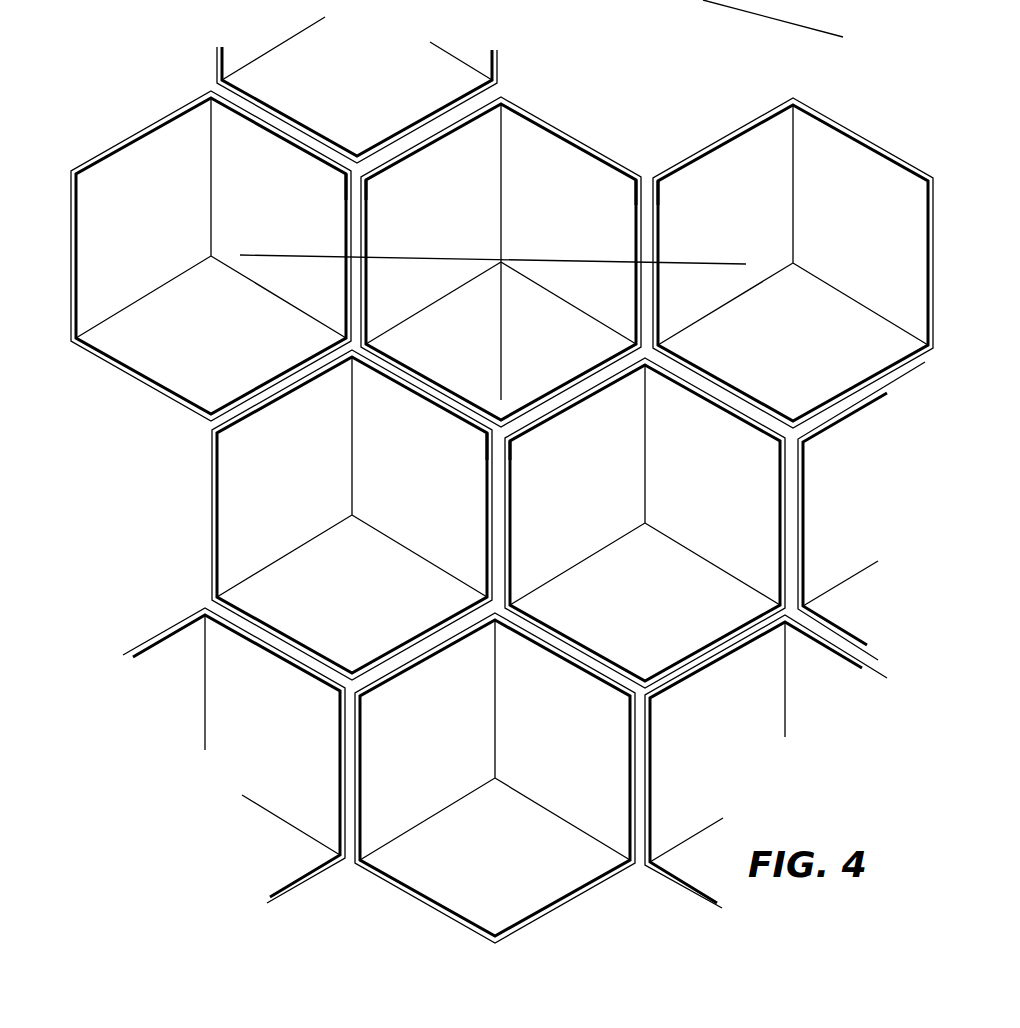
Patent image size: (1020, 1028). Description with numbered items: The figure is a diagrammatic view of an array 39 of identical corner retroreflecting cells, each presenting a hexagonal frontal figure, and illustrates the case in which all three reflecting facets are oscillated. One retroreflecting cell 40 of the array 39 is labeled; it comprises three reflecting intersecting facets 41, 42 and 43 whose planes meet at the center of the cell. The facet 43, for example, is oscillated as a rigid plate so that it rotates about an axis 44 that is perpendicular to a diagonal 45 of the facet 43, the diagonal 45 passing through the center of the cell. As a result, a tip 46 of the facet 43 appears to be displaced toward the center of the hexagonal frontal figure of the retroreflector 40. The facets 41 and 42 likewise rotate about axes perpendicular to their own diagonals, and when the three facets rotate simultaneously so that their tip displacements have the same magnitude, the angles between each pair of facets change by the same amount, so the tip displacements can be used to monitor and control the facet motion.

The array 39 is at (830, 494).
The retroreflecting cell 40 is at (379, 135).
The facet 41 is at (428, 222).
The facet 42 is at (586, 218).
The facet 43 is at (455, 356).
The axis 44 is at (302, 255).
The diagonal 45 is at (501, 368).
The tip 46 is at (357, 172).